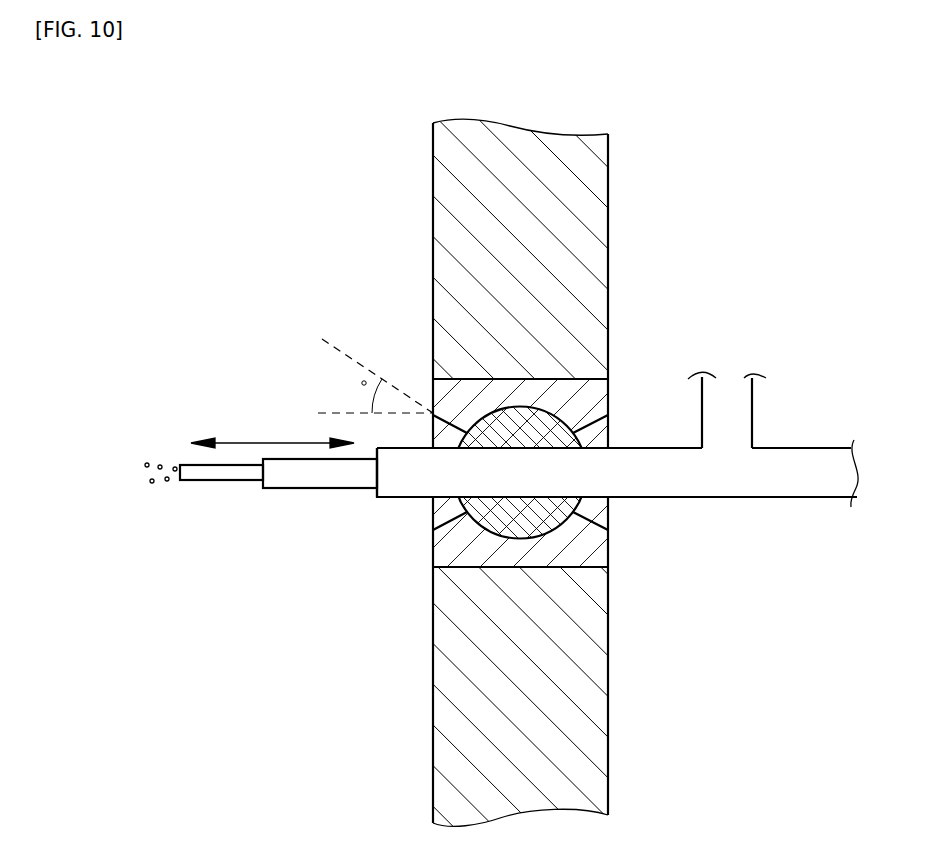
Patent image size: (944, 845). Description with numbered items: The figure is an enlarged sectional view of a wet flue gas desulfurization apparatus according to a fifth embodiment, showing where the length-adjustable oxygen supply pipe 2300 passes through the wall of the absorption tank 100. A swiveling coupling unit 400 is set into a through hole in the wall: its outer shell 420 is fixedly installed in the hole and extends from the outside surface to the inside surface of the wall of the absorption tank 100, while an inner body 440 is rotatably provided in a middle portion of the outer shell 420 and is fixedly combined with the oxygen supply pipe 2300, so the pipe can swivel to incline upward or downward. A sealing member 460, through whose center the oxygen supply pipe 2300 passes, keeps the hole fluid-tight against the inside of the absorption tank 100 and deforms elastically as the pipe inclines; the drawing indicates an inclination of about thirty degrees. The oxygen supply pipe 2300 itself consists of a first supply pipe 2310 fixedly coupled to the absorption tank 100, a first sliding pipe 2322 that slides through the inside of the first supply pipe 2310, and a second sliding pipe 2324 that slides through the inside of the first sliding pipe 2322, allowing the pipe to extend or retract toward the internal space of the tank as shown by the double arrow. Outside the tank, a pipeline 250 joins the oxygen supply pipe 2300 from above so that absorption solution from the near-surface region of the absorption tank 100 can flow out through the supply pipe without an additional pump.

The absorption tank 100 is at (555, 213).
The pipeline 250 is at (730, 392).
The swiveling coupling unit 400 is at (418, 391).
The outer shell 420 is at (604, 390).
The inner body 440 is at (560, 523).
The sealing member 460 is at (435, 432).
The oxygen supply pipe 2300 is at (727, 505).
The first supply pipe 2310 is at (397, 478).
The first sliding pipe 2322 is at (313, 475).
The second sliding pipe 2324 is at (219, 477).